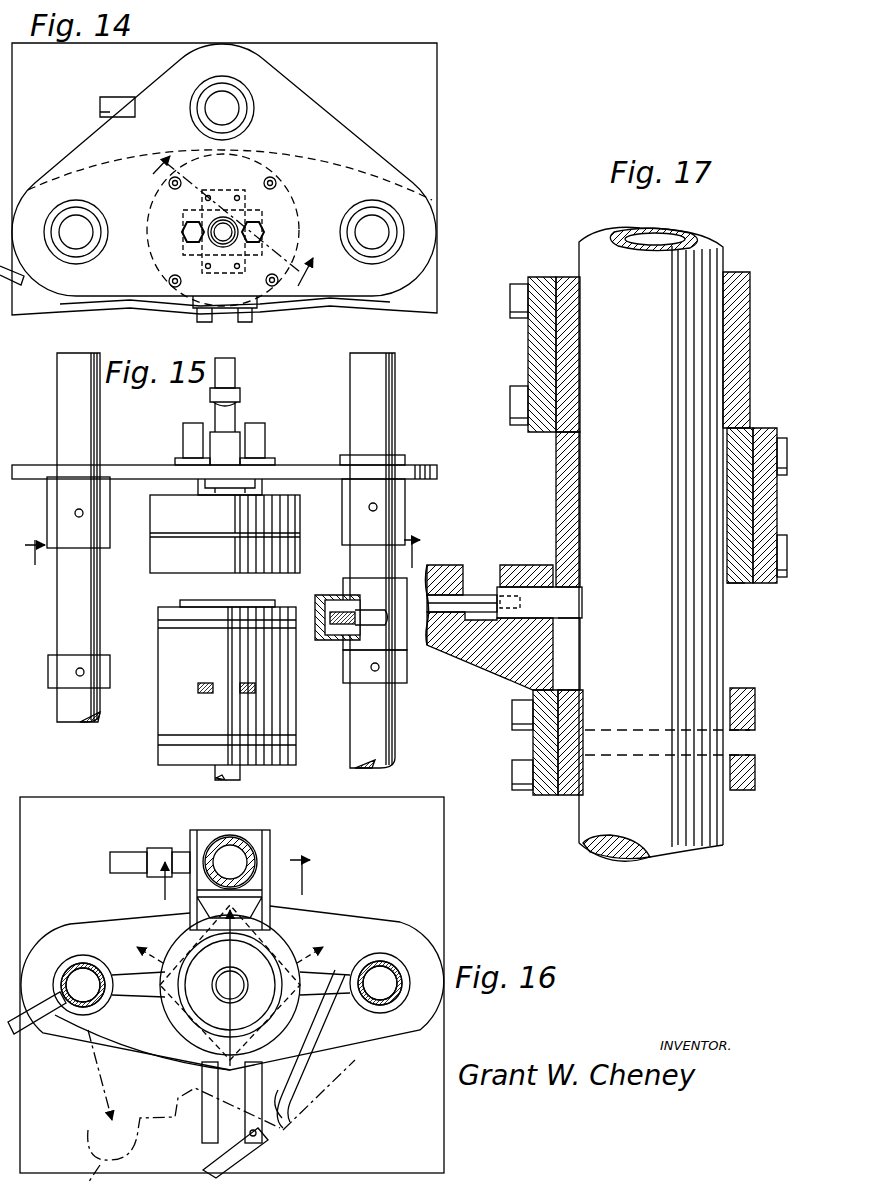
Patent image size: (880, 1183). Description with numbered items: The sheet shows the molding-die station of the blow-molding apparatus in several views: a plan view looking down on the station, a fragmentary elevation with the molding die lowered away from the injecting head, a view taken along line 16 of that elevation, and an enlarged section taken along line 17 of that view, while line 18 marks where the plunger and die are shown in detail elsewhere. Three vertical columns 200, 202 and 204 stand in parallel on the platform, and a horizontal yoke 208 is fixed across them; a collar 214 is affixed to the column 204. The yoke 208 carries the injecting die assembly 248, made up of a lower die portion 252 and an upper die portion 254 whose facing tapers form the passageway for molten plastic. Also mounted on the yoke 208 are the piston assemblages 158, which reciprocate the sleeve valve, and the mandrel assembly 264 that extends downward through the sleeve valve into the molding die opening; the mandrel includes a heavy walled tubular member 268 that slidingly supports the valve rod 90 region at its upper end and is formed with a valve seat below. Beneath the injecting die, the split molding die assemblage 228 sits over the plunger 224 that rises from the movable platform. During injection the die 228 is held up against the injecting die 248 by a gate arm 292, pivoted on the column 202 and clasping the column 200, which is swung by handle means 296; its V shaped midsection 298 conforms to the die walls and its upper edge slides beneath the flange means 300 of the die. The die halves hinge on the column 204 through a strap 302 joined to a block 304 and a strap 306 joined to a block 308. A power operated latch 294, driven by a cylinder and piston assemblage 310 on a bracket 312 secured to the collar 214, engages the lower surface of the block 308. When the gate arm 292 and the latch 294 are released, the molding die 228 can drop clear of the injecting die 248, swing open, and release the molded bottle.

In FIG. 15, the section line 16— 16 is at (223, 542).
In FIG. 16, the section line 17— 17 is at (234, 883).
In FIG. 14, the section line 18— 18 is at (232, 221).
In FIG. 15, the stem 90 is at (236, 365).
In FIG. 15, the piston assemblages 158 is at (183, 430).
In FIG. 14, the column 200 is at (75, 253).
In FIG. 15, the column 200 is at (100, 603).
In FIG. 16, the column 200 is at (83, 968).
In FIG. 14, the column 202 is at (387, 220).
In FIG. 15, the column 202 is at (395, 733).
In FIG. 16, the column 202 is at (390, 970).
In FIG. 14, the column 204 is at (243, 90).
In FIG. 17, the column 204 is at (715, 652).
In FIG. 16, the column 204 is at (250, 852).
In FIG. 14, the yoke 208 is at (353, 138).
In FIG. 15, the yoke 208 is at (148, 460).
In FIG. 17, the collar member 214 is at (745, 790).
In FIG. 15, the plunger 224 is at (240, 772).
In FIG. 15, the molding die assemblage 228 is at (318, 712).
In FIG. 15, the injecting die assembly 248 is at (147, 550).
In FIG. 15, the lower die portion 252 is at (292, 556).
In FIG. 15, the upper die portion 254 is at (292, 516).
In FIG. 15, the mandrel assembly 264 is at (228, 440).
In FIG. 15, the tubular member 268 is at (236, 405).
In FIG. 15, the gate arm 292 is at (330, 640).
In FIG. 16, the gate arm 292 is at (140, 1030).
In FIG. 17, the latch 294 is at (537, 595).
In FIG. 16, the handle means 296 is at (30, 1035).
In FIG. 16, the V shaped midsection 298 is at (280, 1128).
In FIG. 15, the flange means 300 is at (183, 632).
In FIG. 17, the strap 302 is at (528, 337).
In FIG. 17, the block 304 is at (565, 350).
In FIG. 17, the strap 306 is at (760, 432).
In FIG. 17, the block 308 is at (738, 583).
In FIG. 17, the cylinder and piston assemblage 310 is at (447, 600).
In FIG. 17, the bracket 312 is at (486, 645).